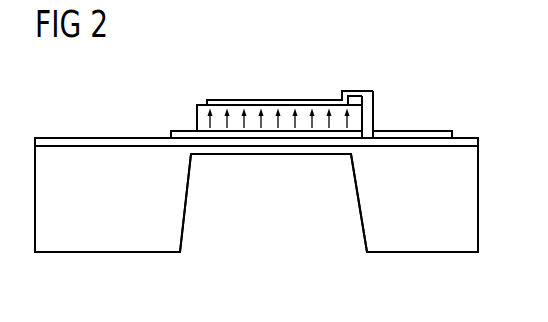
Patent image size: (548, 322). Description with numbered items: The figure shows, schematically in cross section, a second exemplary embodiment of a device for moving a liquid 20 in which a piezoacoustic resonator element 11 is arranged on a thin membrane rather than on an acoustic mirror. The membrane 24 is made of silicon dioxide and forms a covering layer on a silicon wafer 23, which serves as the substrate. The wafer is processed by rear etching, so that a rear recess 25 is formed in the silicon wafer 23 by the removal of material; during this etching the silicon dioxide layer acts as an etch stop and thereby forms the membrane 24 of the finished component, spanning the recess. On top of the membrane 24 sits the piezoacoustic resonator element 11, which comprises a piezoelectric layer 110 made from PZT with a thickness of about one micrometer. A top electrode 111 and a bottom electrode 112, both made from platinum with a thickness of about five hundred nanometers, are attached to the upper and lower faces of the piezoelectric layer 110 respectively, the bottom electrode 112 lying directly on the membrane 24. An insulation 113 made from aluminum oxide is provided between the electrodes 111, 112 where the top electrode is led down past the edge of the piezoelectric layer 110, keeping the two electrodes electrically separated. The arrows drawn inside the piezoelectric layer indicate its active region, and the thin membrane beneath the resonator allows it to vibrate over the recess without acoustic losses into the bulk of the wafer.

The device for moving a liquid 20 is at (433, 72).
The silicon wafer 23 is at (467, 217).
The membrane 24 is at (477, 143).
The rear recess 25 is at (279, 237).
The piezoacoustic resonator element 11 is at (272, 90).
The piezoelectric layer 110 is at (291, 112).
The top electrode 111 is at (322, 100).
The bottom electrode 112 is at (185, 130).
The insulation 113 is at (366, 118).